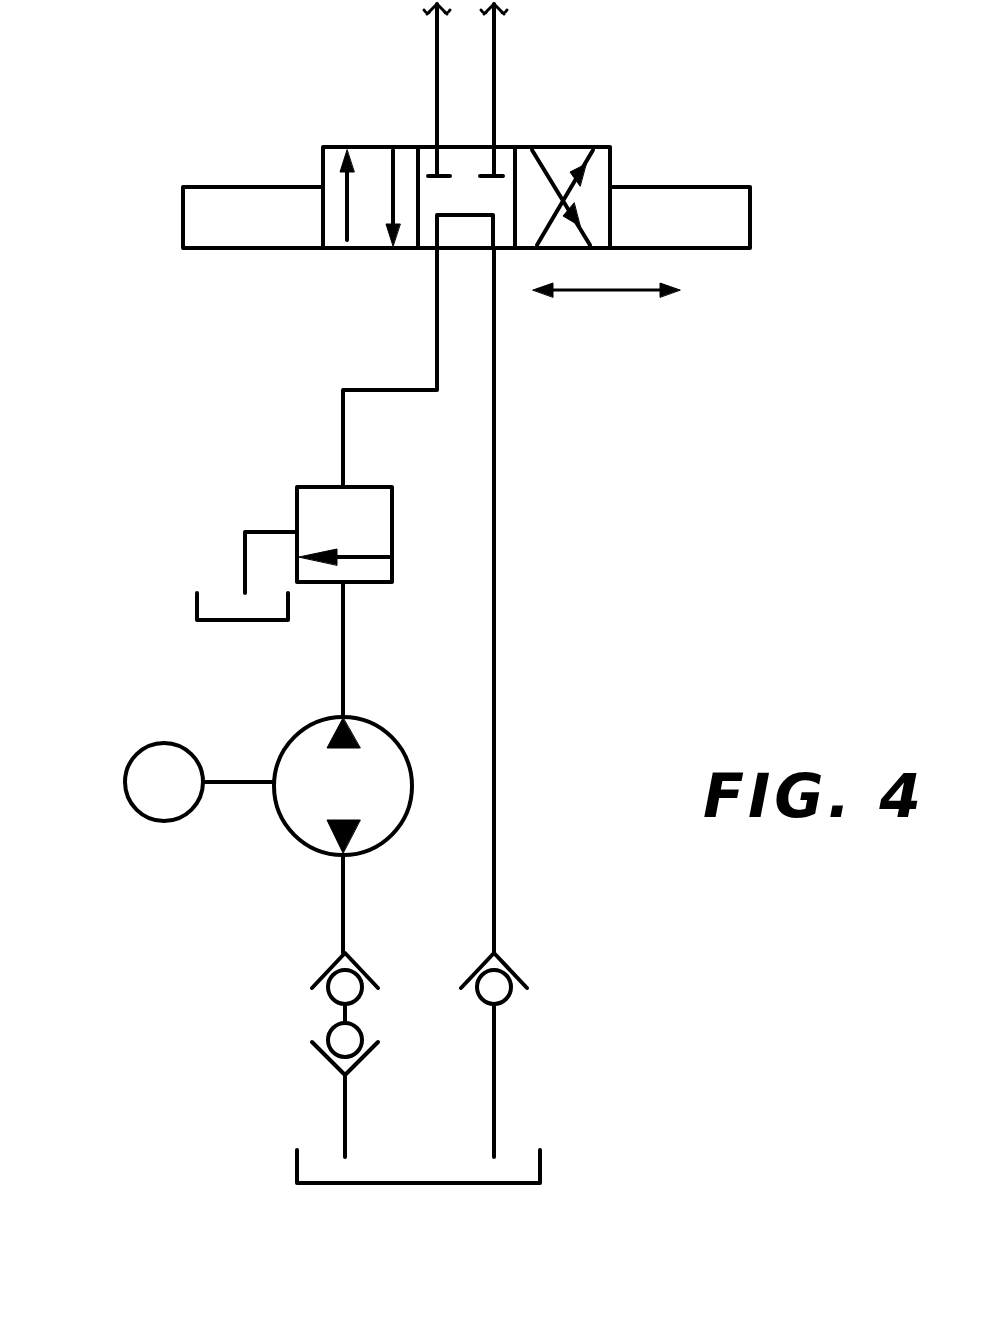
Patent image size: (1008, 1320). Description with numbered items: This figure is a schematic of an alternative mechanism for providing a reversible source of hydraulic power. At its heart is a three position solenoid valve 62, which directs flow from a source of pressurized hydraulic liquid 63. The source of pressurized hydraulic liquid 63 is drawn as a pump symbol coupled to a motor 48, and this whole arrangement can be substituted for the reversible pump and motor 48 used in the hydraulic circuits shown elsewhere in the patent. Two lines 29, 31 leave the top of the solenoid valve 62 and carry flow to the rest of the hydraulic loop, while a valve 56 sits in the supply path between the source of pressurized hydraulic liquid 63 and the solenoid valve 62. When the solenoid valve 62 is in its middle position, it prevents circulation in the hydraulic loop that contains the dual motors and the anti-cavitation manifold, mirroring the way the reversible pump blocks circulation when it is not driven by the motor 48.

The conduit 29 is at (437, 53).
The conduit 31 is at (494, 53).
The three position solenoid valve 62 is at (748, 173).
The pressure relief valve 56 is at (313, 487).
The motor 48 is at (147, 755).
The source of pressurized hydraulic liquid 63 is at (385, 730).